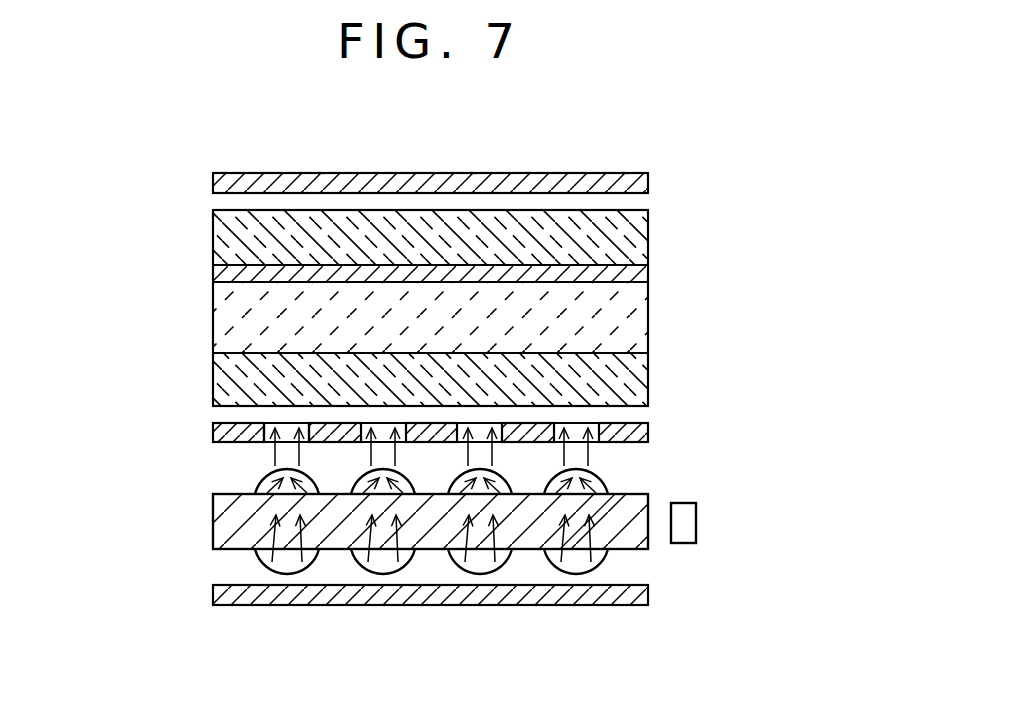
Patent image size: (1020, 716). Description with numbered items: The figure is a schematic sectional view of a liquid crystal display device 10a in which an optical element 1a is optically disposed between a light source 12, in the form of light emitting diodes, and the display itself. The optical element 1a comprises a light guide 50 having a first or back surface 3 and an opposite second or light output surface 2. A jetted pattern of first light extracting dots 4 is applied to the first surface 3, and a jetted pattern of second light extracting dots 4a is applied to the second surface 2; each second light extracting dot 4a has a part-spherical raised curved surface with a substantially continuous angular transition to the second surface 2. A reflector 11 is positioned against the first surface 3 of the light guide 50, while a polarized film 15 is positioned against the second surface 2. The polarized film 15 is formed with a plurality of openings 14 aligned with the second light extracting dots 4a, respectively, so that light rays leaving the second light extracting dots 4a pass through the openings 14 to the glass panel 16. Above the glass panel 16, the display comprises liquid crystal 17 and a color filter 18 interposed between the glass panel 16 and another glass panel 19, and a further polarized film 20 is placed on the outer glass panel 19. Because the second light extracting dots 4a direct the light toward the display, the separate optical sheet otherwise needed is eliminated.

The polarized film 20 is at (532, 173).
The liquid crystal display (LCD) device 10a is at (200, 243).
The glass panel 19 is at (648, 238).
The color filter 18 is at (217, 269).
The liquid crystal 17 is at (648, 318).
The glass panel 16 is at (648, 382).
The polarized film 15 is at (648, 432).
The openings 14 is at (282, 425).
The optical element 1a is at (205, 516).
The second surface 2 is at (620, 497).
The light guide 50 is at (637, 508).
The first surface 3 is at (625, 556).
The second light extracting dots 4a is at (262, 480).
The first light extracting dots 4 is at (258, 563).
The light source 12 is at (690, 521).
The reflector 11 is at (436, 605).